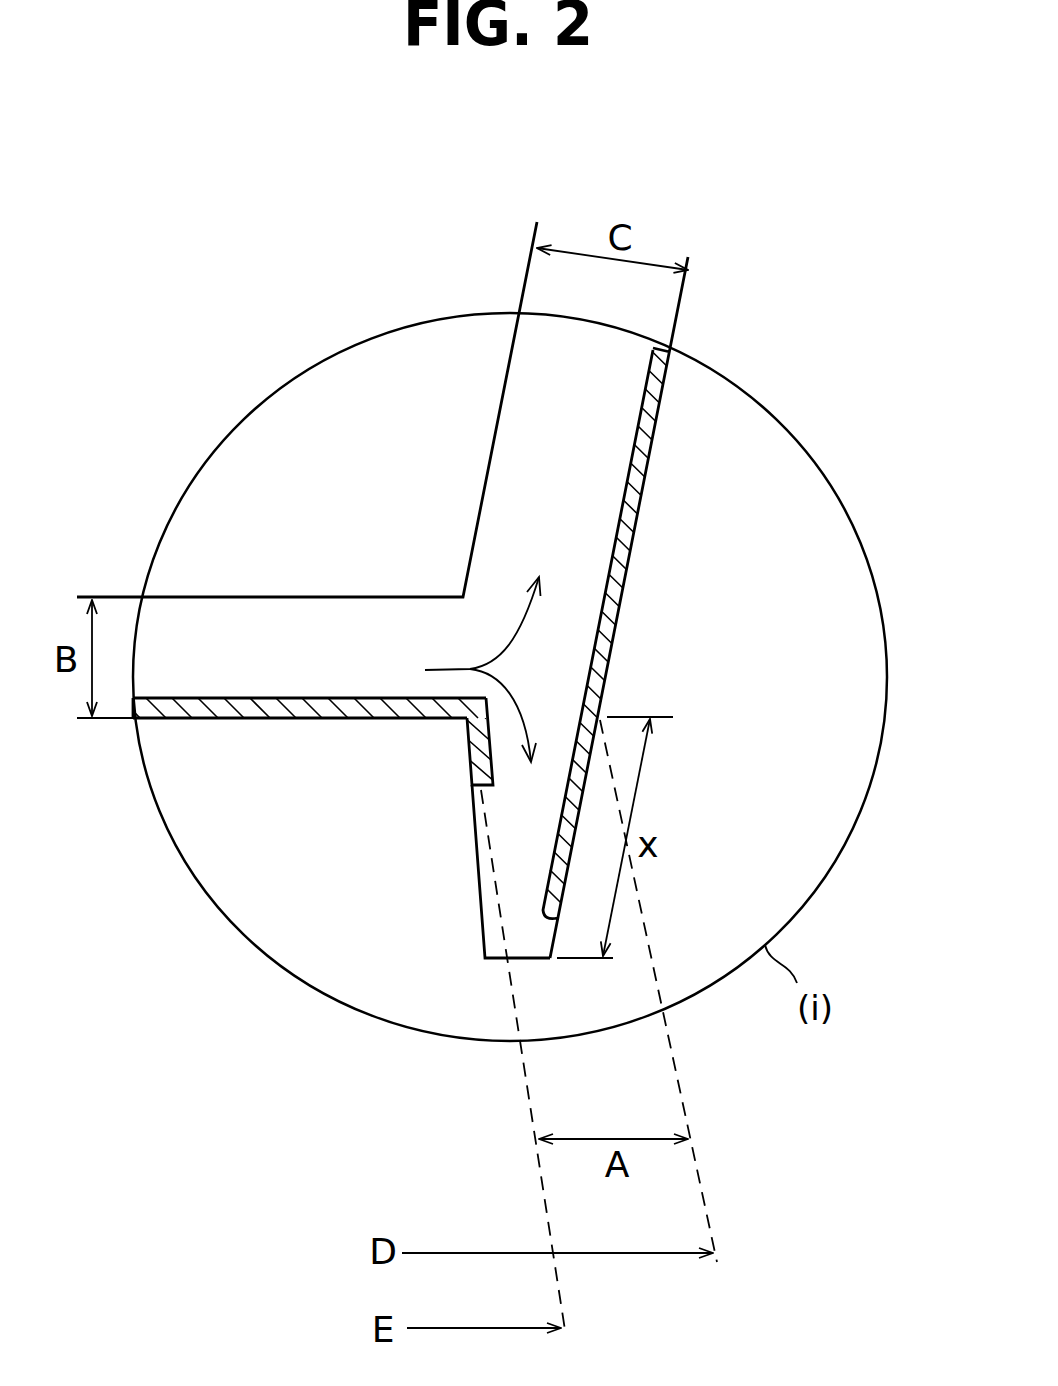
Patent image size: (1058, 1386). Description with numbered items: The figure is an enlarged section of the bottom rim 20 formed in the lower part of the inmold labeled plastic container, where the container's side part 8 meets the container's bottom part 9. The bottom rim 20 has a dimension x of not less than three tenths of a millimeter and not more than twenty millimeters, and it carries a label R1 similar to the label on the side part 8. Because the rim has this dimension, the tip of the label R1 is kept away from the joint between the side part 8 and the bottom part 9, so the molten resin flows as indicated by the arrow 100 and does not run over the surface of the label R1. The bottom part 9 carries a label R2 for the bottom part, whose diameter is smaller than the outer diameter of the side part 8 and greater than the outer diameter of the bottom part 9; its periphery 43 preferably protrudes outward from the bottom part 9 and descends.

The container's side part 8 is at (513, 460).
The container's bottom part 9 is at (257, 650).
The bottom rim 20 is at (426, 830).
The periphery 43 is at (478, 750).
The arrow 100 is at (512, 645).
The label R1 is at (627, 538).
The label for the bottom part R2 is at (157, 712).